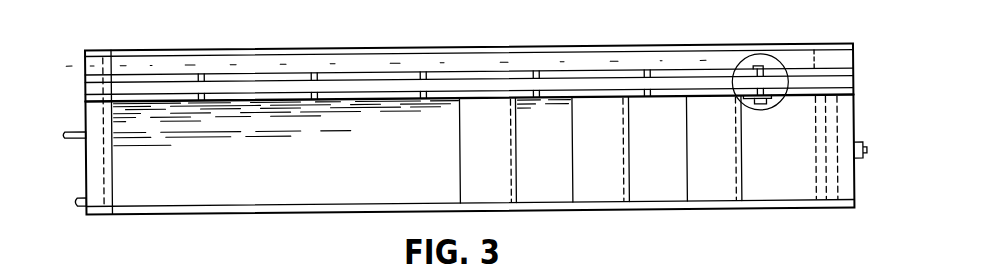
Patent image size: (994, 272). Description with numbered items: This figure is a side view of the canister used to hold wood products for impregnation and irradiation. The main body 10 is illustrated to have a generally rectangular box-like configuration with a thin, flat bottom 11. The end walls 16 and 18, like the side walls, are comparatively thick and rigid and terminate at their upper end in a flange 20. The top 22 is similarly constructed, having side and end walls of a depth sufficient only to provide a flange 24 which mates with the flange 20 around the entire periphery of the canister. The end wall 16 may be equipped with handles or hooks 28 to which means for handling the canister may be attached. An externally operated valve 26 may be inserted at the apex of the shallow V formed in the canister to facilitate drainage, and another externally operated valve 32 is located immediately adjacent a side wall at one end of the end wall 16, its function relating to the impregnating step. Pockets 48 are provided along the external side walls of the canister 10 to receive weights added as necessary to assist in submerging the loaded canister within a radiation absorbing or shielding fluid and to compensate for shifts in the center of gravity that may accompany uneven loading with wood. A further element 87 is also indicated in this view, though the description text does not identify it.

The main body 10 is at (265, 174).
The bottom 11 is at (202, 216).
The end wall 16 is at (102, 150).
The end wall 18 is at (815, 147).
The flange 20 is at (369, 103).
The top 22 is at (371, 50).
The flange 24 is at (258, 76).
The externally operated valve 26 is at (866, 157).
The handles or hooks 28 is at (63, 132).
The externally operated valve 32 is at (76, 200).
The pockets 48 is at (587, 144).
The partition wall 87 is at (837, 187).